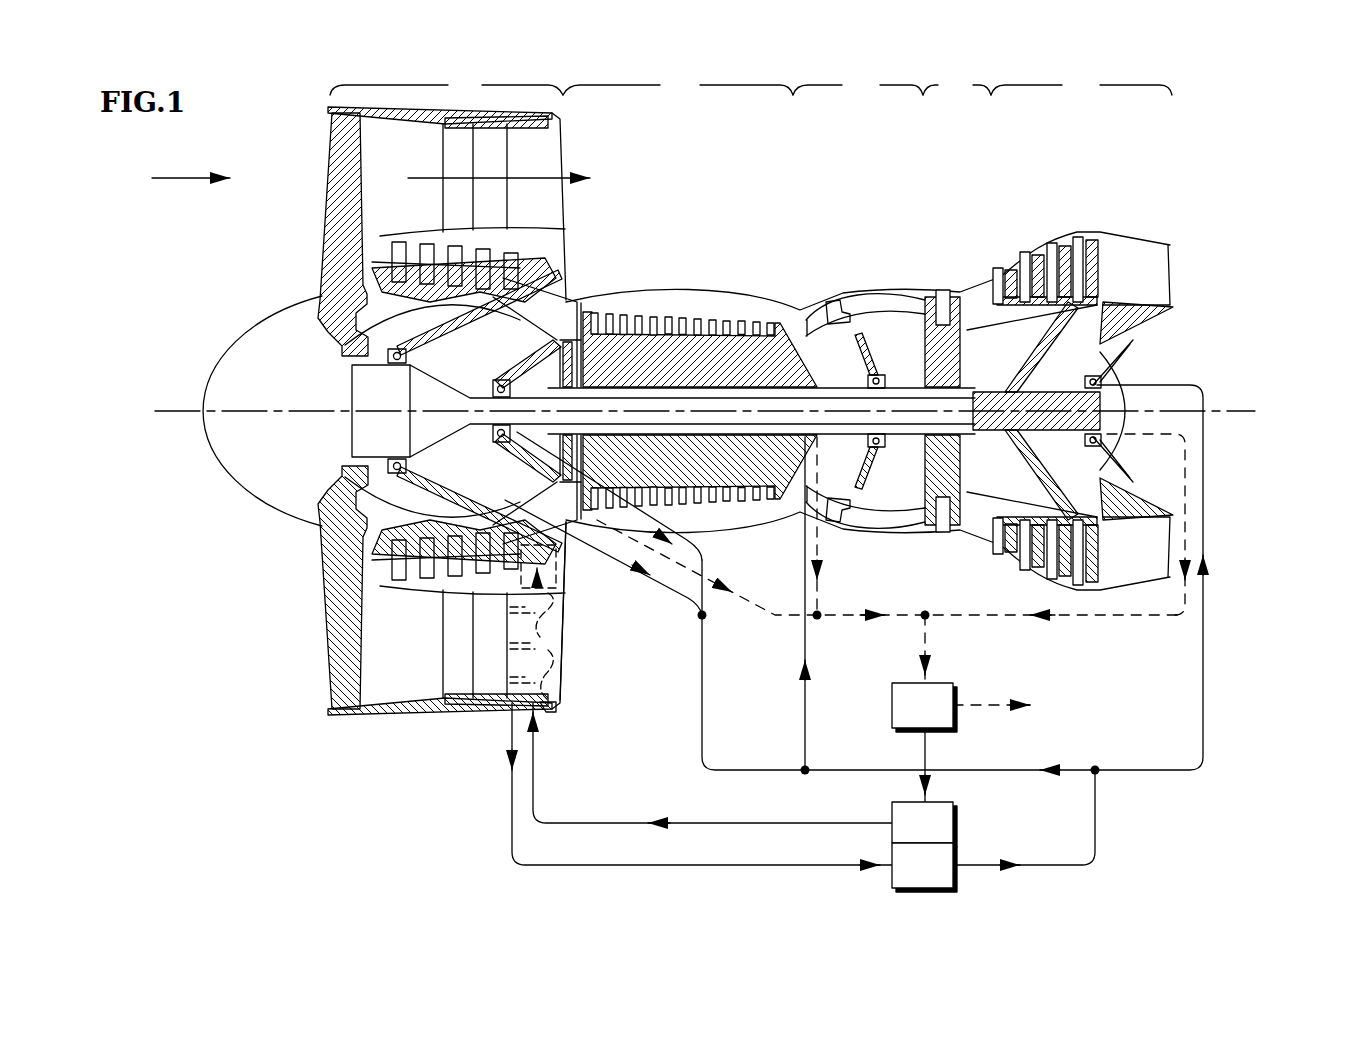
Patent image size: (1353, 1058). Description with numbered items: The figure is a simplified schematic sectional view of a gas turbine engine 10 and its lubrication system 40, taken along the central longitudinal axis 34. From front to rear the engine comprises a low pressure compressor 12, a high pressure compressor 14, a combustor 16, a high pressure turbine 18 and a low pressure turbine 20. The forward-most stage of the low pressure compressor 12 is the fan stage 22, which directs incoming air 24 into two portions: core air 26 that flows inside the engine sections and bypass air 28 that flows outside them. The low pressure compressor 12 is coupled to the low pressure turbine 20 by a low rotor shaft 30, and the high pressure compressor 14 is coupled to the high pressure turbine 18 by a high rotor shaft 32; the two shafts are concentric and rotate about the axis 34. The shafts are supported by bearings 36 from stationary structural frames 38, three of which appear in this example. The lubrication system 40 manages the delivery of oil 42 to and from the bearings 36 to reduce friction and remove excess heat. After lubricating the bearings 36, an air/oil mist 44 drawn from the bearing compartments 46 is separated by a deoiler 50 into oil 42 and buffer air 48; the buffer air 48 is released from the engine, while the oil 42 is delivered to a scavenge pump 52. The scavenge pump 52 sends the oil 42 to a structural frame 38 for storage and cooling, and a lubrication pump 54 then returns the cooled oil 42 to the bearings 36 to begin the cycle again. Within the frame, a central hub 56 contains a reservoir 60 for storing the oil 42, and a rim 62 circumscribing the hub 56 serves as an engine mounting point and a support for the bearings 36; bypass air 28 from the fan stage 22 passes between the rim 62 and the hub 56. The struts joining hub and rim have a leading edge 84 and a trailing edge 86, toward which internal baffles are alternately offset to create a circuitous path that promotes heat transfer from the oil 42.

The gas turbine engine 10 is at (1130, 156).
The low pressure compressor 12 is at (446, 85).
The high pressure compressor 14 is at (678, 85).
The combustor 16 is at (858, 85).
The high pressure turbine 18 is at (957, 85).
The low pressure turbine 20 is at (1081, 85).
The fan stage 22 is at (322, 205).
The incoming air 24 is at (162, 178).
The core air 26 is at (506, 534).
The bypass air 28 is at (572, 175).
The low rotor shaft 30 is at (978, 395).
The high rotor shaft 32 is at (826, 358).
The central longitudinal axis 34 is at (172, 410).
The bearings 36 is at (390, 353).
The structural frames 38 is at (570, 240).
The lubrication system 40 is at (1222, 637).
The oil 42 is at (930, 748).
The air/oil mist 44 is at (452, 474).
The bearing compartments 46 is at (492, 318).
The buffer air 48 is at (990, 700).
The deoiler 50 is at (896, 683).
The scavenge pump 52 is at (894, 802).
The lubrication pump 54 is at (900, 890).
The central hub 56 is at (571, 580).
The reservoir 60 is at (526, 569).
The rim 62 is at (552, 712).
The leading edge 84 is at (518, 650).
The trailing edge 86 is at (552, 640).